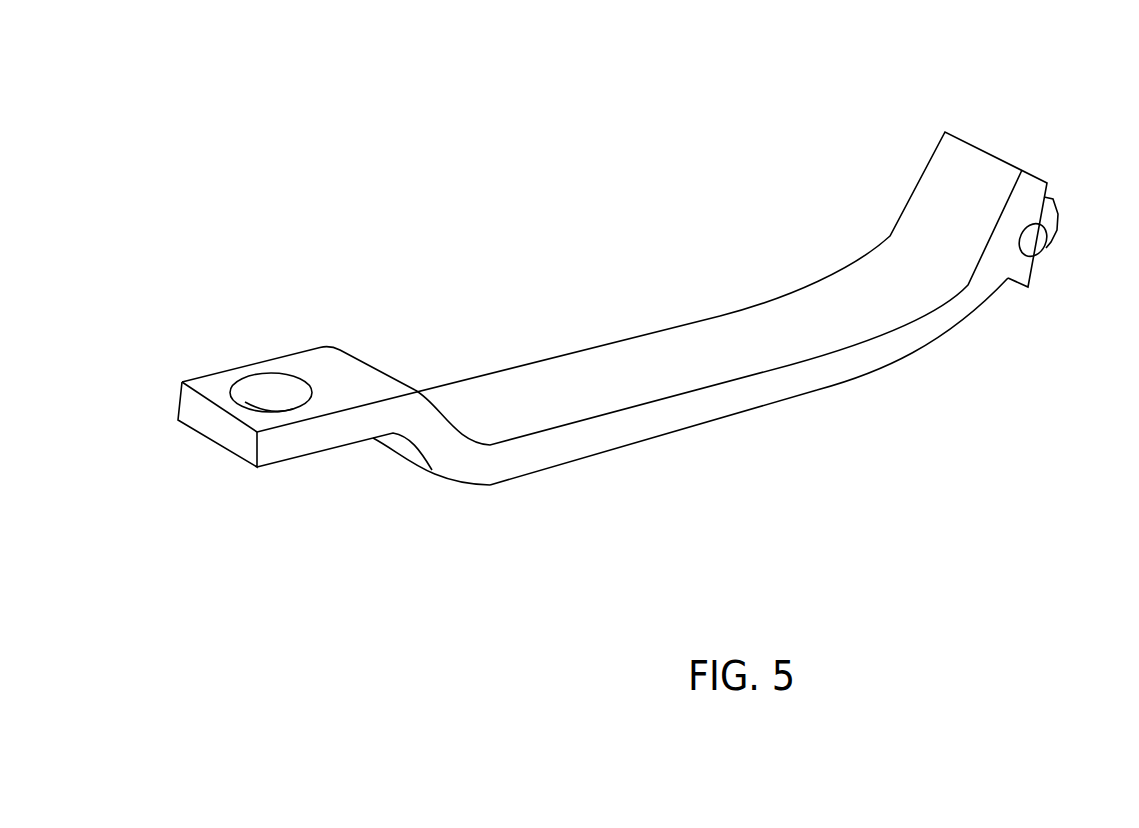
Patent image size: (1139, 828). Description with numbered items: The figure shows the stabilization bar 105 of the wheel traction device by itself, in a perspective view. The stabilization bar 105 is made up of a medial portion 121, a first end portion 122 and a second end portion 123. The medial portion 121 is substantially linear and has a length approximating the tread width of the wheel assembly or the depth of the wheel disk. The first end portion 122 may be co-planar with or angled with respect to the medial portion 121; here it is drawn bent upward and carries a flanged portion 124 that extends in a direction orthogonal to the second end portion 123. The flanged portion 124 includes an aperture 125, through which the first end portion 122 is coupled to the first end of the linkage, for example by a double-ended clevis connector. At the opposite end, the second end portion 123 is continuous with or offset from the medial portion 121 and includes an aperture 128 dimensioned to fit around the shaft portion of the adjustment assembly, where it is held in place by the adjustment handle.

The stabilization bar 105 is at (450, 170).
The medial portion 121 is at (677, 357).
The first end portion 122 is at (960, 185).
The second end portion 123 is at (294, 438).
The flanged portion 124 is at (1023, 275).
The aperture 125 is at (1036, 239).
The aperture 128 is at (268, 389).